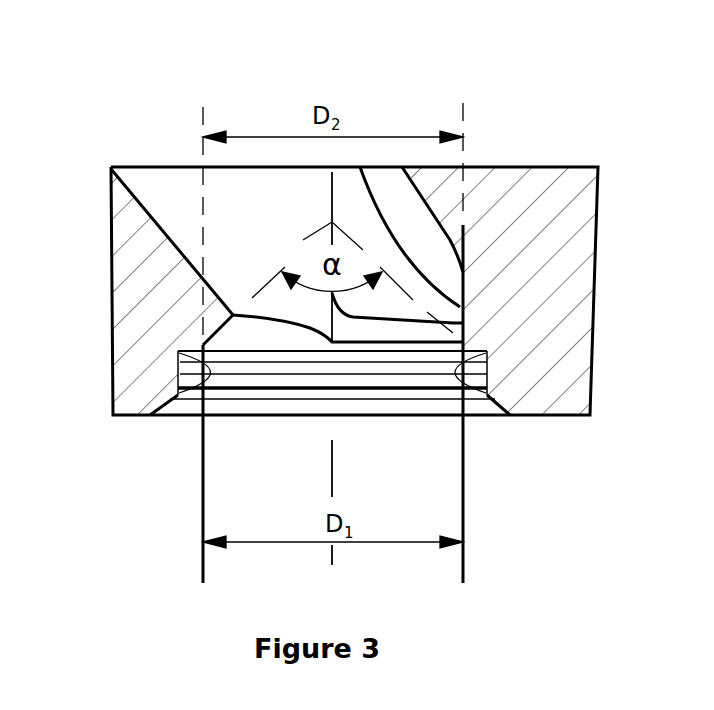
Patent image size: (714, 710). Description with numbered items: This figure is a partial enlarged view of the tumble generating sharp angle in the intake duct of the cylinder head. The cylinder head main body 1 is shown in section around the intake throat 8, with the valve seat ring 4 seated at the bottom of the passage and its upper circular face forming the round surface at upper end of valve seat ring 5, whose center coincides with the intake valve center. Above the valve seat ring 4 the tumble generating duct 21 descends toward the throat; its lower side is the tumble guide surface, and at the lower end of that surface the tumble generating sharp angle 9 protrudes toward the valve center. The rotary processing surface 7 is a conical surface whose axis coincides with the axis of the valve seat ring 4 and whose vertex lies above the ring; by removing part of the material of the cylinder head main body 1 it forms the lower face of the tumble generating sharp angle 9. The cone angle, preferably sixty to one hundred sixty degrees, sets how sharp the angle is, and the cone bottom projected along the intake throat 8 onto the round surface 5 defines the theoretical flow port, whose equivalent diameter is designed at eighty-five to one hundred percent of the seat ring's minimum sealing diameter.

The cylinder head main body 1 is at (537, 180).
The tumble generating duct 21 is at (178, 203).
The tumble generating sharp angle 9 is at (207, 243).
The rotary processing surface 7 is at (261, 285).
The round surface at upper end of valve seat ring 5 is at (190, 358).
The valve seat ring 4 is at (193, 370).
The intake throat 8 is at (407, 407).